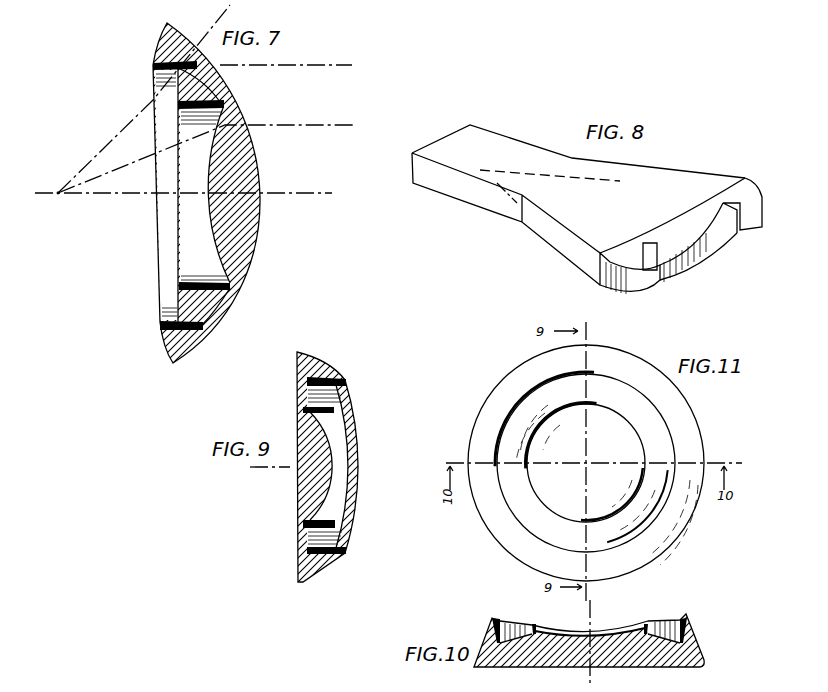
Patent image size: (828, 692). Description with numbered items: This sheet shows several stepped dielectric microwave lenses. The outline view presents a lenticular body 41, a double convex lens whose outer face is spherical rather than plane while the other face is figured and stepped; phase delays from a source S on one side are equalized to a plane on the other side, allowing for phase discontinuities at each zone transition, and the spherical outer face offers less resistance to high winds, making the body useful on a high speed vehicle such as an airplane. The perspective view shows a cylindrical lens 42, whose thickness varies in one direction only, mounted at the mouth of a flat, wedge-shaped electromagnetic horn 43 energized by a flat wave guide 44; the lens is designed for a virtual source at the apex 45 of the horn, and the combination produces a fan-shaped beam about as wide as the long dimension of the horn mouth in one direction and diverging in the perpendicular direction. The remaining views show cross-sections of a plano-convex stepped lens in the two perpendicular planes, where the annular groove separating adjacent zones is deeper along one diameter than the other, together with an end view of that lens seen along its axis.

In FIG. 7, the lenticular body 41 is at (264, 187).
In FIG. 8, the cylindrical lens 42 is at (712, 240).
In FIG. 8, the flat electromagnetic horn 43 is at (562, 253).
In FIG. 8, the flat wave guide 44 is at (458, 199).
In FIG. 8, the apex 45 is at (480, 170).
In FIG. 7, the light source point S is at (46, 185).